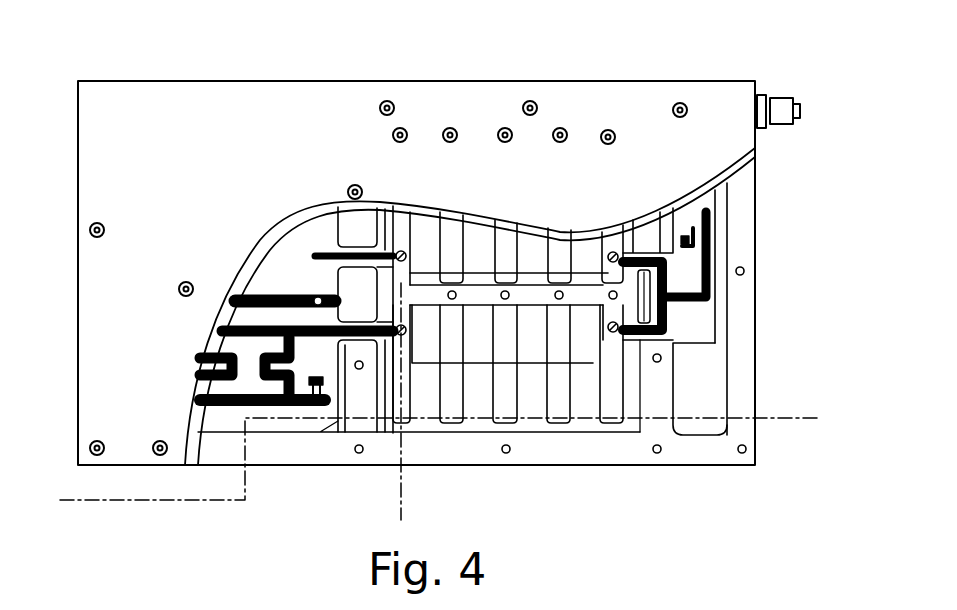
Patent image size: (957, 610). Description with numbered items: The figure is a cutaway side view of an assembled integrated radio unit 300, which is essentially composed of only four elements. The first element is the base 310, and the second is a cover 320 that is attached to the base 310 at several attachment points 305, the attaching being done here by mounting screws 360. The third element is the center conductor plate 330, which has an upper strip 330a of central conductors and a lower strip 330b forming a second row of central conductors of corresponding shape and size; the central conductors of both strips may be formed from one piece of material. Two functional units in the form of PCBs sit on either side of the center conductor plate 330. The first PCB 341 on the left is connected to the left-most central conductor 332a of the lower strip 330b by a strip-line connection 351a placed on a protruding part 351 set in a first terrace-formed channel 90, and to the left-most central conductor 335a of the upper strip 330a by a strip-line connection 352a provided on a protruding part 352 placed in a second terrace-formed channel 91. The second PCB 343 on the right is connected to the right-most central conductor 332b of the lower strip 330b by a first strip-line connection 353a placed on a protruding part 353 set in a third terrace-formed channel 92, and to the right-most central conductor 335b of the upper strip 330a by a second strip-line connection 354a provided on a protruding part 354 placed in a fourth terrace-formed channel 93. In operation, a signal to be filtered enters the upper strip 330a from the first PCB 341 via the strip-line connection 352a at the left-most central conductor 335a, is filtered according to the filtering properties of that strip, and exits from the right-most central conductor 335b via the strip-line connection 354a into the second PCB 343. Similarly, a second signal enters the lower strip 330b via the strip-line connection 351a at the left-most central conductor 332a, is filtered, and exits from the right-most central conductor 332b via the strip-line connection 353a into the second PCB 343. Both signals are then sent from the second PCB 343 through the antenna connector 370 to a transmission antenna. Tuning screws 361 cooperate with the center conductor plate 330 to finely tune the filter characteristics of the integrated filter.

The integrated radio unit 300 is at (80, 36).
The attachment points 305 is at (742, 455).
The base 310 is at (757, 400).
The cover 320 is at (102, 399).
The center conductor plate 330 is at (598, 425).
The upper strip 330a is at (558, 270).
The lower strip 330b is at (530, 420).
The left-most central conductor of the lower strip 332a is at (407, 423).
The right-most central conductor of the lower strip 332b is at (627, 425).
The left-most central conductor of the upper strip 335a is at (403, 272).
The right-most central conductor of the upper strip 335b is at (608, 240).
The first PCB 341 is at (258, 318).
The second PCB 343 is at (683, 267).
The protruding part 351 is at (347, 436).
The strip-line connection 351a is at (380, 432).
The protruding part 352 is at (356, 248).
The strip-line connection 352a is at (385, 245).
The protruding part 353 is at (677, 377).
The first strip-line connection 353a is at (643, 333).
The protruding part 354 is at (663, 240).
The second strip-line connection 354a is at (667, 283).
The mounting screws 360 is at (388, 100).
The tuning screws 361 is at (505, 127).
The antenna connector 370 is at (784, 130).
The first terrace-formed channel 90 is at (350, 300).
The second terrace-formed channel 91 is at (340, 240).
The third terrace-formed channel 92 is at (653, 340).
The fourth terrace-formed channel 93 is at (633, 247).